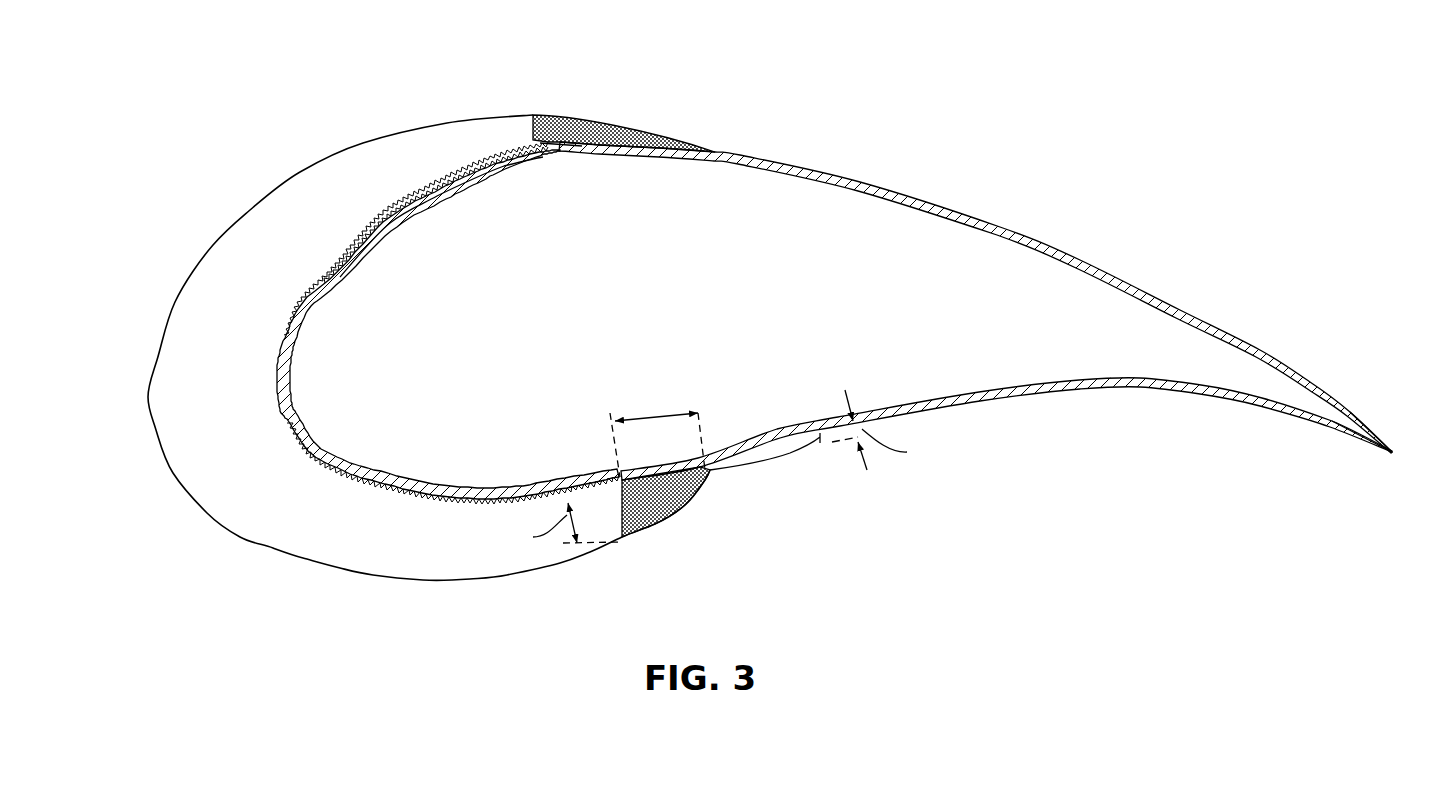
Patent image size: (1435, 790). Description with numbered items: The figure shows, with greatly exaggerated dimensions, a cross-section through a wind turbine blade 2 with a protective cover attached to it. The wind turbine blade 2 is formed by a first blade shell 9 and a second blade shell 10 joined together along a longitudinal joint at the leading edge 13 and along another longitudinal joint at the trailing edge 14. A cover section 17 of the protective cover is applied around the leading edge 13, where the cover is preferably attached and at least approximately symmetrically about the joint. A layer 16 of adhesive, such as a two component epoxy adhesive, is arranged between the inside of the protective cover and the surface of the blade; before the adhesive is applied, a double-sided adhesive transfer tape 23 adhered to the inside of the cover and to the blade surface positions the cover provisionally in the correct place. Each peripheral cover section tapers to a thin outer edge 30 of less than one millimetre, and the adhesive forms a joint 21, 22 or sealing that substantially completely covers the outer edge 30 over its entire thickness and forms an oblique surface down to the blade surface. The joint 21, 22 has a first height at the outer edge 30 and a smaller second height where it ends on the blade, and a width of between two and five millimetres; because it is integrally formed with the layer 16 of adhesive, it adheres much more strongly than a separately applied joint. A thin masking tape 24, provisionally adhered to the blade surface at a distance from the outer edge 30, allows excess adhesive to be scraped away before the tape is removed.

The wind turbine blade 2 is at (869, 503).
The first blade shell 9 is at (857, 188).
The second blade shell 10 is at (1135, 385).
The leading edge 13 is at (136, 194).
The trailing edge 14 is at (1339, 366).
The layer of adhesive 16 is at (423, 183).
The cover section 17 is at (165, 422).
The joint 21 is at (580, 120).
The joint 22 is at (662, 520).
The double-sided adhesive transfer tape 23 is at (280, 345).
The masking tape 24 is at (760, 457).
The outer edge 30 is at (557, 147).